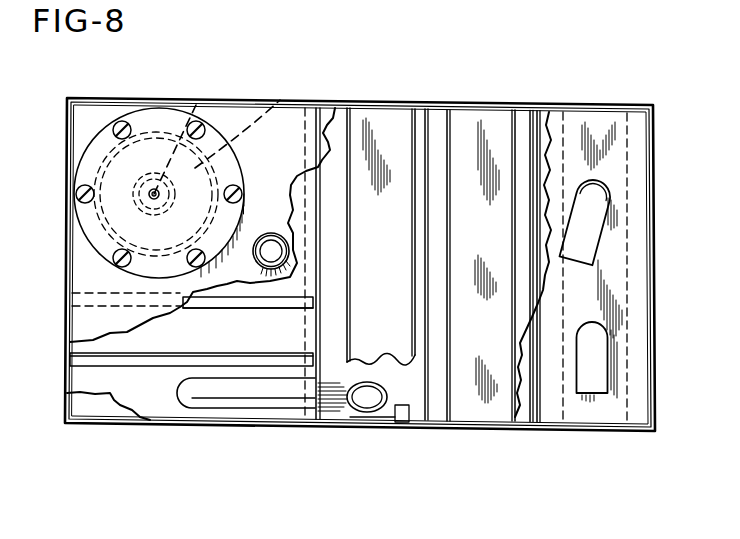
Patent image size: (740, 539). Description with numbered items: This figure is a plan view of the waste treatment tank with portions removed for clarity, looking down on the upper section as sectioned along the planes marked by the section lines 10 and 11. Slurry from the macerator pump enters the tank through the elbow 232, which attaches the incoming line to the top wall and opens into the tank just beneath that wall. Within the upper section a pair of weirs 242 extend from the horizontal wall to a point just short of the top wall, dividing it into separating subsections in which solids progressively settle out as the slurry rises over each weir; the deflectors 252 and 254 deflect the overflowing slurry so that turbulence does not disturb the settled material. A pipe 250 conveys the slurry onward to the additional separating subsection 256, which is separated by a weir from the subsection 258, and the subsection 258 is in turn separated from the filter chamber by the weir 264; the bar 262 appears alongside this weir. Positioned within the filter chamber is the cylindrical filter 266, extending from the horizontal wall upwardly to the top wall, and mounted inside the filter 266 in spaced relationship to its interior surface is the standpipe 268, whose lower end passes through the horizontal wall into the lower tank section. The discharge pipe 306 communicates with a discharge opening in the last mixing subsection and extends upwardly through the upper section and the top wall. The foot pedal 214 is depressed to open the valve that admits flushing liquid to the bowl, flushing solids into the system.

The section line 10- 10 is at (589, 271).
The section line 11- 11 is at (145, 265).
The foot pedal 214 is at (152, 193).
The elbow 232 is at (593, 233).
The weirs 242 is at (528, 120).
The pipe 250 is at (227, 397).
The deflector 252 is at (498, 232).
The deflector 254 is at (398, 257).
The additional separating subsection 256 is at (108, 392).
The subsection 258 is at (145, 348).
The bar 262 is at (222, 290).
The weir 264 is at (270, 308).
The cylindrical filter 266 is at (280, 100).
The standpipe 268 is at (196, 105).
The discharge pipe 306 is at (602, 362).